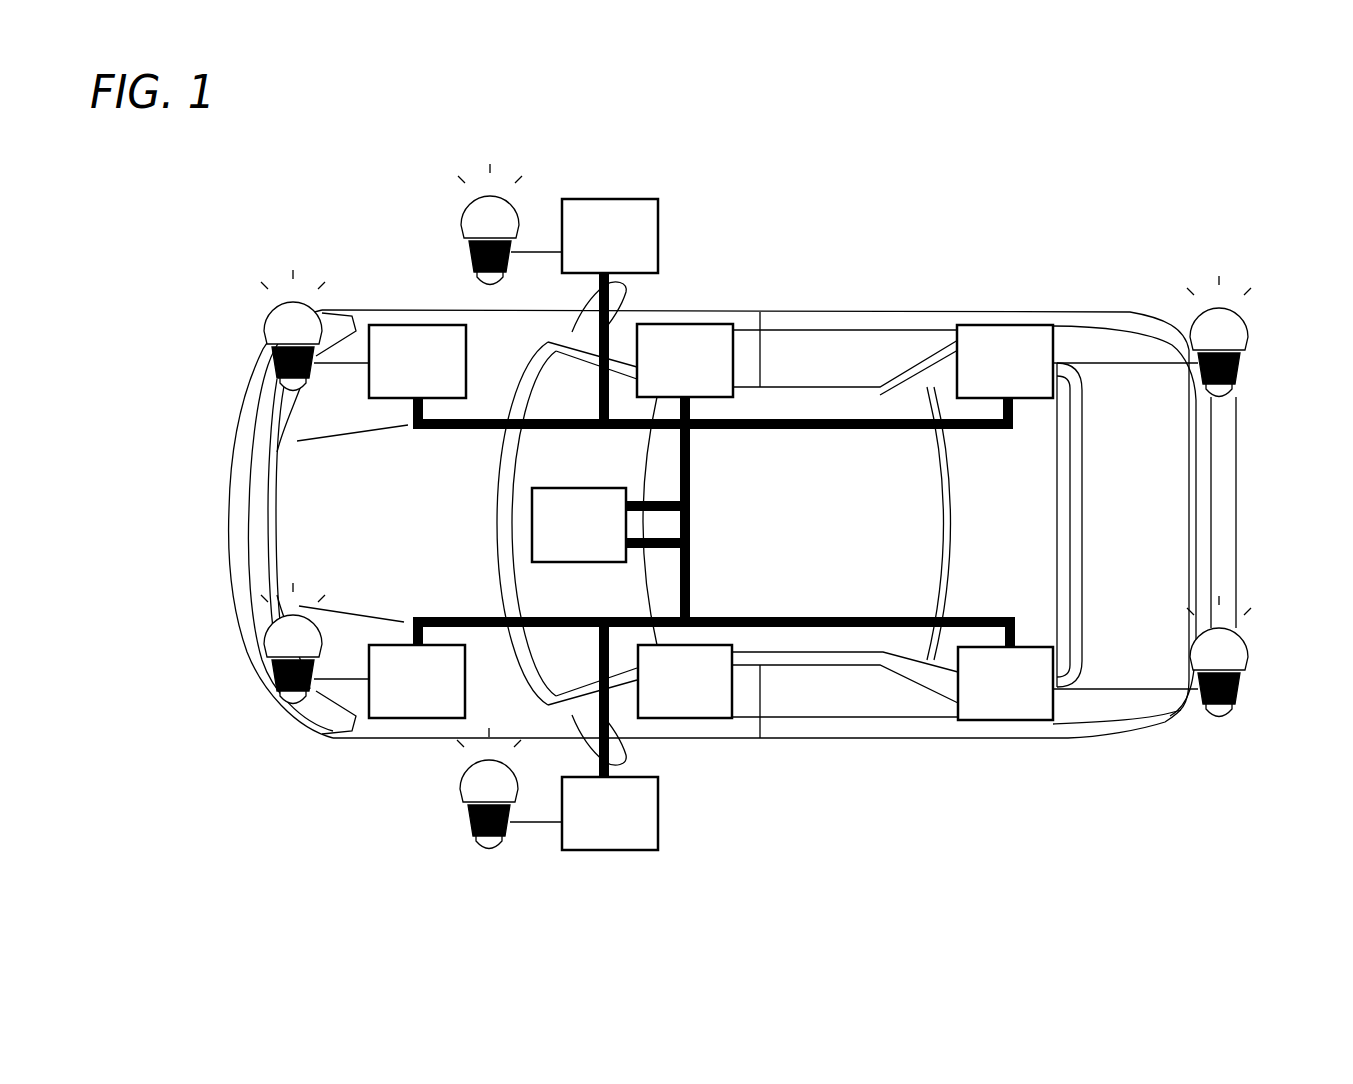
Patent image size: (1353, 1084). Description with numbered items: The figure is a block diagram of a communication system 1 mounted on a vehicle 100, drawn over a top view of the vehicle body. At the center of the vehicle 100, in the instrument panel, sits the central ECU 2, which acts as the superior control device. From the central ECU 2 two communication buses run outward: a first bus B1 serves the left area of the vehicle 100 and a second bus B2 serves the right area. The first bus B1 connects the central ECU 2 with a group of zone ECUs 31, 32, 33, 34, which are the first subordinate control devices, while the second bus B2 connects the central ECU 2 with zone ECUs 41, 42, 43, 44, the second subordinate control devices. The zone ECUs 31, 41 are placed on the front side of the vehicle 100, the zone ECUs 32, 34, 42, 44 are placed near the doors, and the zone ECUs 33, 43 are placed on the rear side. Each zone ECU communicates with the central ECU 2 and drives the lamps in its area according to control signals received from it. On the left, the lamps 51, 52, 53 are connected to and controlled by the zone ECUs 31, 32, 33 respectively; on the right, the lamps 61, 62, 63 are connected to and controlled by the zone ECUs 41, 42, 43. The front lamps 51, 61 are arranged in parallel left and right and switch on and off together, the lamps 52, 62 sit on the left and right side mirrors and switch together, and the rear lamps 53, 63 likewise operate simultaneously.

The communication system 1 is at (1093, 169).
The vehicle 100 is at (822, 312).
The central ECU 2 is at (532, 538).
The zone ECU 31 is at (420, 720).
The zone ECU 32 is at (622, 853).
The zone ECU 33 is at (998, 722).
The zone ECU 34 is at (710, 720).
The zone ECU 41 is at (420, 322).
The zone ECU 42 is at (637, 197).
The zone ECU 43 is at (1000, 325).
The zone ECU 44 is at (712, 324).
The lamp 51 is at (262, 633).
The lamp 52 is at (460, 800).
The lamp 53 is at (1251, 647).
The lamp 61 is at (263, 323).
The lamp 62 is at (460, 217).
The lamp 63 is at (1251, 330).
The communication bus B1 is at (782, 615).
The communication bus B2 is at (850, 433).